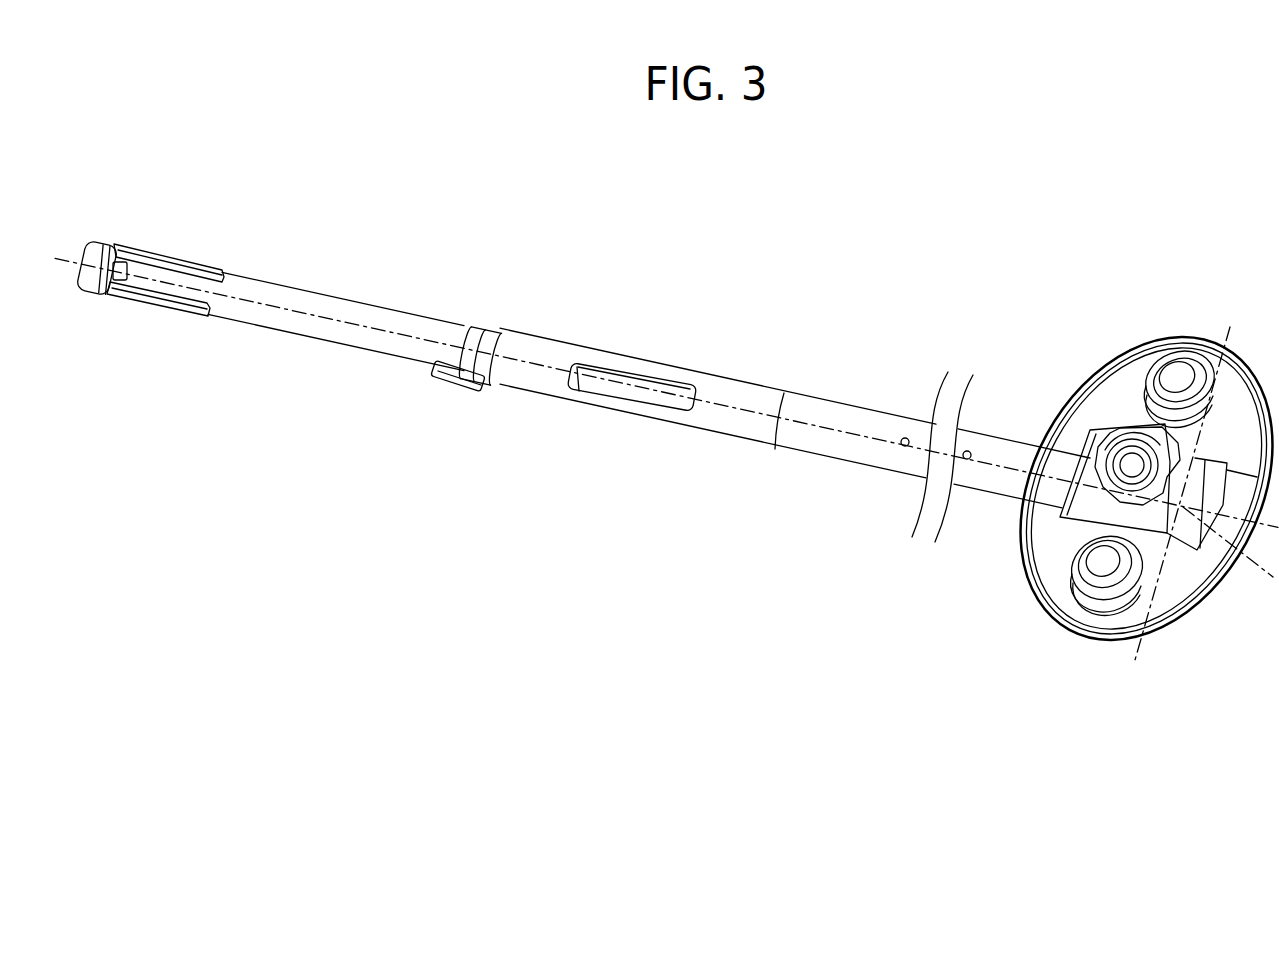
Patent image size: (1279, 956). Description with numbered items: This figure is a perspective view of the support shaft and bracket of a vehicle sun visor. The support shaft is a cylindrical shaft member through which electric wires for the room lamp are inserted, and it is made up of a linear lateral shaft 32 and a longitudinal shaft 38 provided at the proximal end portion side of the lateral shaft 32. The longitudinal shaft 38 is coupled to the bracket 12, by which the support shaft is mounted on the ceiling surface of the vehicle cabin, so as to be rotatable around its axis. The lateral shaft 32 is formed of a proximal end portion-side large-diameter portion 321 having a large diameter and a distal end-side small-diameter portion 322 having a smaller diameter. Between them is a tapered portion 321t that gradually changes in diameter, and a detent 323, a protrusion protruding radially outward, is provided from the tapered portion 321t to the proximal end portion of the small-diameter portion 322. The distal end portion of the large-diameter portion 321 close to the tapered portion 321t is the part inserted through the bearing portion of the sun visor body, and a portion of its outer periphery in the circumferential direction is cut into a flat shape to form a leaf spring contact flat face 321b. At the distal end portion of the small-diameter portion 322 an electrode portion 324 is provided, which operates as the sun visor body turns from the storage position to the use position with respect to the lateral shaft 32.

The bracket 12 is at (1173, 582).
The lateral shaft 32 is at (995, 484).
The longitudinal shaft 38 is at (1135, 453).
The large-diameter portion 321 is at (740, 430).
The leaf spring contact flat face 321b is at (640, 380).
The tapered portion 321t is at (493, 333).
The small-diameter portion 322 is at (350, 310).
The detent 323 is at (453, 370).
The electrode portion 324 is at (165, 257).